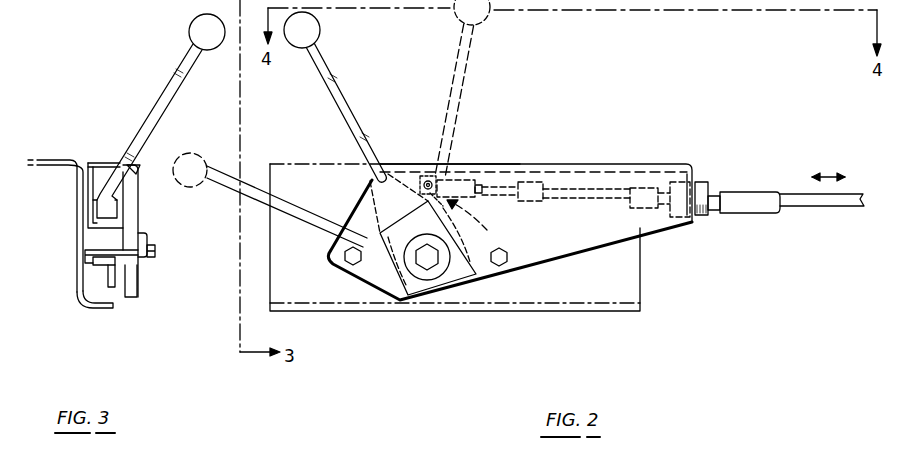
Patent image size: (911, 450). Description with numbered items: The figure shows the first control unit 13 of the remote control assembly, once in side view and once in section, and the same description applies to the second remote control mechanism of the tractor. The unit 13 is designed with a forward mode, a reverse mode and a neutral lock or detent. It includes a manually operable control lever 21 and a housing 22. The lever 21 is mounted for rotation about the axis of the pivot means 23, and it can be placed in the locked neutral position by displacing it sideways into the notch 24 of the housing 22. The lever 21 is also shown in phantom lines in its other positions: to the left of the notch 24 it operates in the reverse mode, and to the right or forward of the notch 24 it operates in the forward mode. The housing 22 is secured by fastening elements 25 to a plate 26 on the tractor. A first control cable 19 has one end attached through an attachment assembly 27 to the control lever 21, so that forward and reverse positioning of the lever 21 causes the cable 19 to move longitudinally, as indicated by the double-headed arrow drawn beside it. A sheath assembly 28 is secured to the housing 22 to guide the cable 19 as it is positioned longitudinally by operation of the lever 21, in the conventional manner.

In FIG. 3, the first control unit 13 is at (43, 141).
In FIG. 2, the first control unit 13 is at (520, 144).
In FIG. 2, the first control cable 19 is at (821, 206).
In FIG. 3, the control lever 21 is at (163, 91).
In FIG. 2, the control lever 21 is at (337, 91).
In FIG. 3, the housing 22 is at (136, 210).
In FIG. 2, the housing 22 is at (593, 171).
In FIG. 3, the pivot means 23 is at (153, 252).
In FIG. 2, the pivot means 23 is at (432, 265).
In FIG. 3, the notch 24 is at (134, 165).
In FIG. 2, the notch 24 is at (380, 163).
In FIG. 3, the fastening elements 25 is at (154, 259).
In FIG. 2, the fastening elements 25 is at (349, 262).
In FIG. 3, the plate 26 is at (89, 290).
In FIG. 2, the plate 26 is at (603, 298).
In FIG. 2, the attachment assembly 27 is at (479, 221).
In FIG. 2, the sheath assembly 28 is at (710, 200).